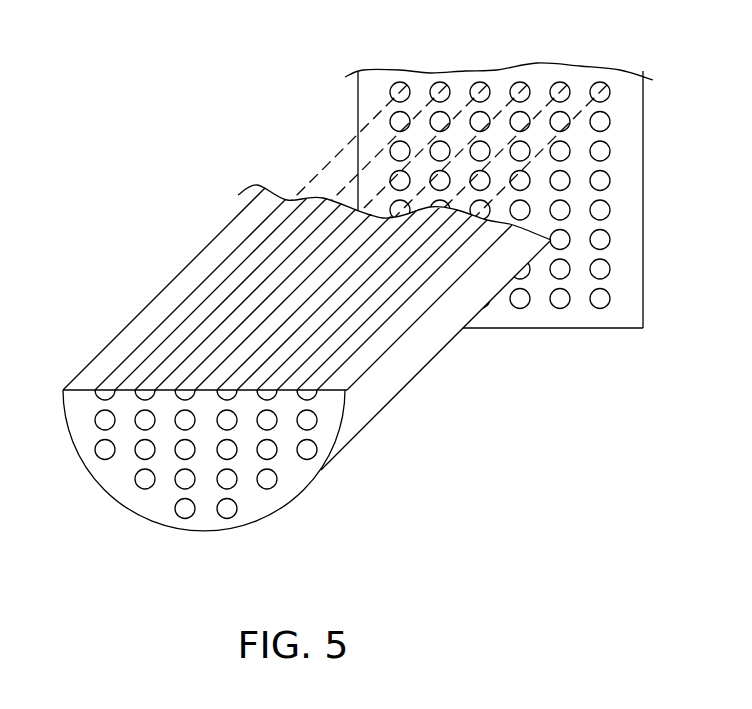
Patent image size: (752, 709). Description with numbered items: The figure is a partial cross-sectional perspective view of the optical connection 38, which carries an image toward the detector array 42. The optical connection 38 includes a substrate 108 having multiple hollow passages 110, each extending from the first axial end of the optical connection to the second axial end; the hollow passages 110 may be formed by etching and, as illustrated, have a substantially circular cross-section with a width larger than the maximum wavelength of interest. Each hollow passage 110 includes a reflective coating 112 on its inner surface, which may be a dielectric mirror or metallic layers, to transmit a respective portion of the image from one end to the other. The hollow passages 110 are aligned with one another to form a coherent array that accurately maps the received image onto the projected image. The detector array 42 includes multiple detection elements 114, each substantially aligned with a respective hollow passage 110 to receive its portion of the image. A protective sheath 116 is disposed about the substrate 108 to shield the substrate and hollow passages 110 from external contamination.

The optical connection 38 is at (277, 378).
The detector array 42 is at (493, 174).
The substrate 108 is at (285, 492).
The hollow passages 110 is at (175, 489).
The reflective coating 112 is at (158, 372).
The detection elements 114 is at (400, 82).
The protective sheath 116 is at (75, 450).